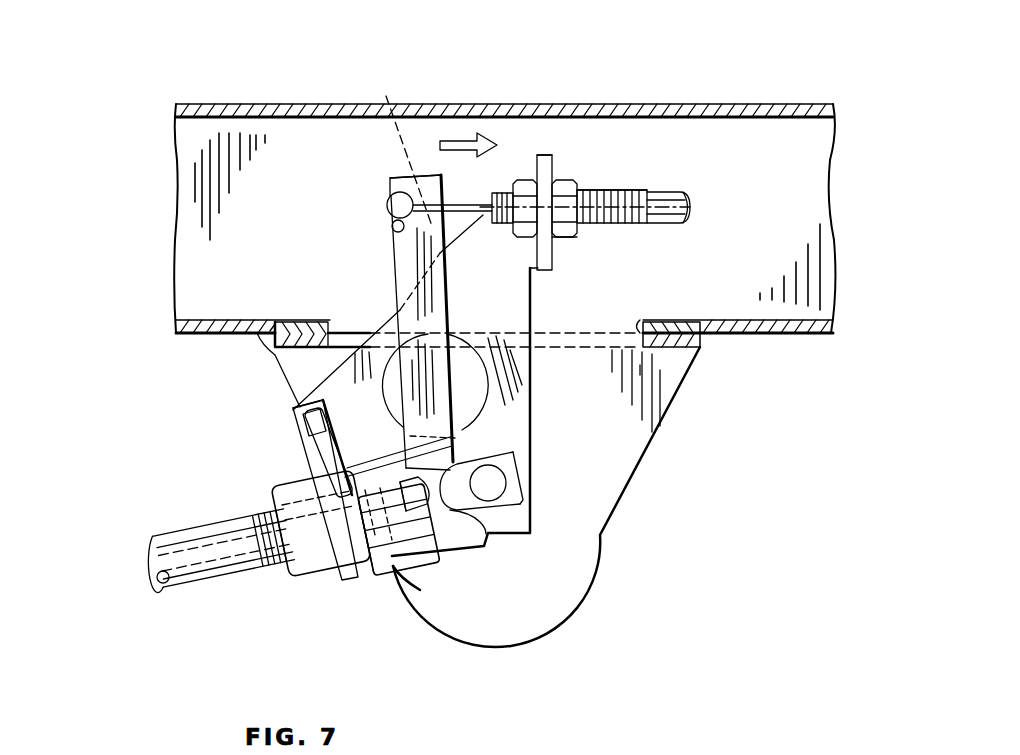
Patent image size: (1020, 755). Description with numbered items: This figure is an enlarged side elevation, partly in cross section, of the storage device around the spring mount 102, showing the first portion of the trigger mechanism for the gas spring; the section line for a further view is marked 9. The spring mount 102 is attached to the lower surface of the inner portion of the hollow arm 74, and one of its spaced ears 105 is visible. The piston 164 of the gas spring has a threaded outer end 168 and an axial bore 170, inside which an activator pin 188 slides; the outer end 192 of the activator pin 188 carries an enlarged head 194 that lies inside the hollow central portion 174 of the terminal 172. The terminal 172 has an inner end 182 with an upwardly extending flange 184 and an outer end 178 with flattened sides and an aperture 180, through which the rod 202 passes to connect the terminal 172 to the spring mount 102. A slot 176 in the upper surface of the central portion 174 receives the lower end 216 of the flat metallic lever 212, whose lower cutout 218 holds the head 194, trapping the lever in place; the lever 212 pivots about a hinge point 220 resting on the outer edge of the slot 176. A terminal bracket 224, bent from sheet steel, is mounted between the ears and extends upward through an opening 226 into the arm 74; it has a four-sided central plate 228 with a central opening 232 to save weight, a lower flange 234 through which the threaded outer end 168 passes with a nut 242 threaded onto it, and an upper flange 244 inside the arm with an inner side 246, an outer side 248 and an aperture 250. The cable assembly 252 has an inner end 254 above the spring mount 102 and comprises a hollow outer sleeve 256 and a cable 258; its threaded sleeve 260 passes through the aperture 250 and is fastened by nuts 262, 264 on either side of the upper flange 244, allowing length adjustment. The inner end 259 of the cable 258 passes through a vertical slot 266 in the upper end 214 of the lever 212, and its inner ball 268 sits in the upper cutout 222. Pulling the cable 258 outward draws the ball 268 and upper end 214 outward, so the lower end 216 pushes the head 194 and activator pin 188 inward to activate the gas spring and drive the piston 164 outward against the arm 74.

The section line 9- 9 is at (527, 43).
The arm 74 is at (690, 108).
The spring mount 102 is at (673, 405).
The ear 105 is at (650, 413).
The piston 164 is at (182, 588).
The outer end 168 is at (307, 582).
The axial bore 170 is at (222, 588).
The terminal 172 is at (418, 555).
The hollow central portion 174 is at (388, 546).
The slot 176 is at (403, 436).
The outer end 178 is at (503, 460).
The aperture 180 is at (503, 485).
The inner end 182 is at (353, 582).
The flange 184 is at (323, 402).
The activator pin 188 is at (233, 543).
The outer end 192 is at (392, 545).
The enlarged head 194 is at (440, 573).
The rod 202 is at (505, 500).
The lever 212 is at (395, 252).
The upper end 214 is at (400, 180).
The lower end 216 is at (490, 547).
The lower cutout 218 is at (540, 404).
The hinge point 220 is at (462, 430).
The upper cutout 222 is at (393, 228).
The terminal bracket 224 is at (535, 300).
The opening 226 is at (636, 322).
The central plate 228 is at (534, 328).
The central opening 232 is at (385, 350).
The lower flange 234 is at (307, 434).
The nut 242 is at (293, 490).
The upper flange 244 is at (541, 162).
The inner side 246 is at (503, 140).
The outer side 248 is at (556, 166).
The aperture 250 is at (563, 185).
The cable assembly 252 is at (708, 195).
The inner end 254 is at (612, 168).
The outer sleeve 256 is at (697, 230).
The cable 258 is at (648, 200).
The inner end 259 is at (462, 203).
The threaded sleeve 260 is at (592, 197).
The nut 262 is at (527, 236).
The nut 264 is at (540, 247).
The vertical slot 266 is at (386, 120).
The inner ball 268 is at (388, 205).